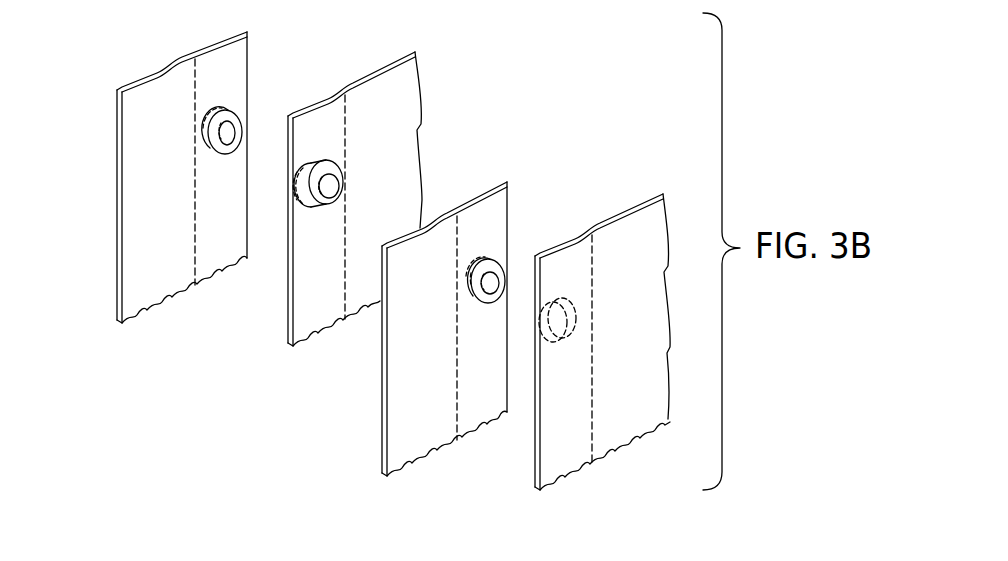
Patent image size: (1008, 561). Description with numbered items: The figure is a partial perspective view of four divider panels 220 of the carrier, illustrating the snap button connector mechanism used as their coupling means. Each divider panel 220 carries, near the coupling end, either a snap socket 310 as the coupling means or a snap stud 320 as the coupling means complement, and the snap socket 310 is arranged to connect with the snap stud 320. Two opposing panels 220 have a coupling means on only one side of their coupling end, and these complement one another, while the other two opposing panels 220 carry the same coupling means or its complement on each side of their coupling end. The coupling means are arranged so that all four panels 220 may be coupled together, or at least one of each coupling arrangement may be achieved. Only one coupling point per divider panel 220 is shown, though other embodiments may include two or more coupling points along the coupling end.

The divider panel 220 is at (620, 170).
The snap socket 310 is at (233, 118).
The snap stud 320 is at (332, 192).